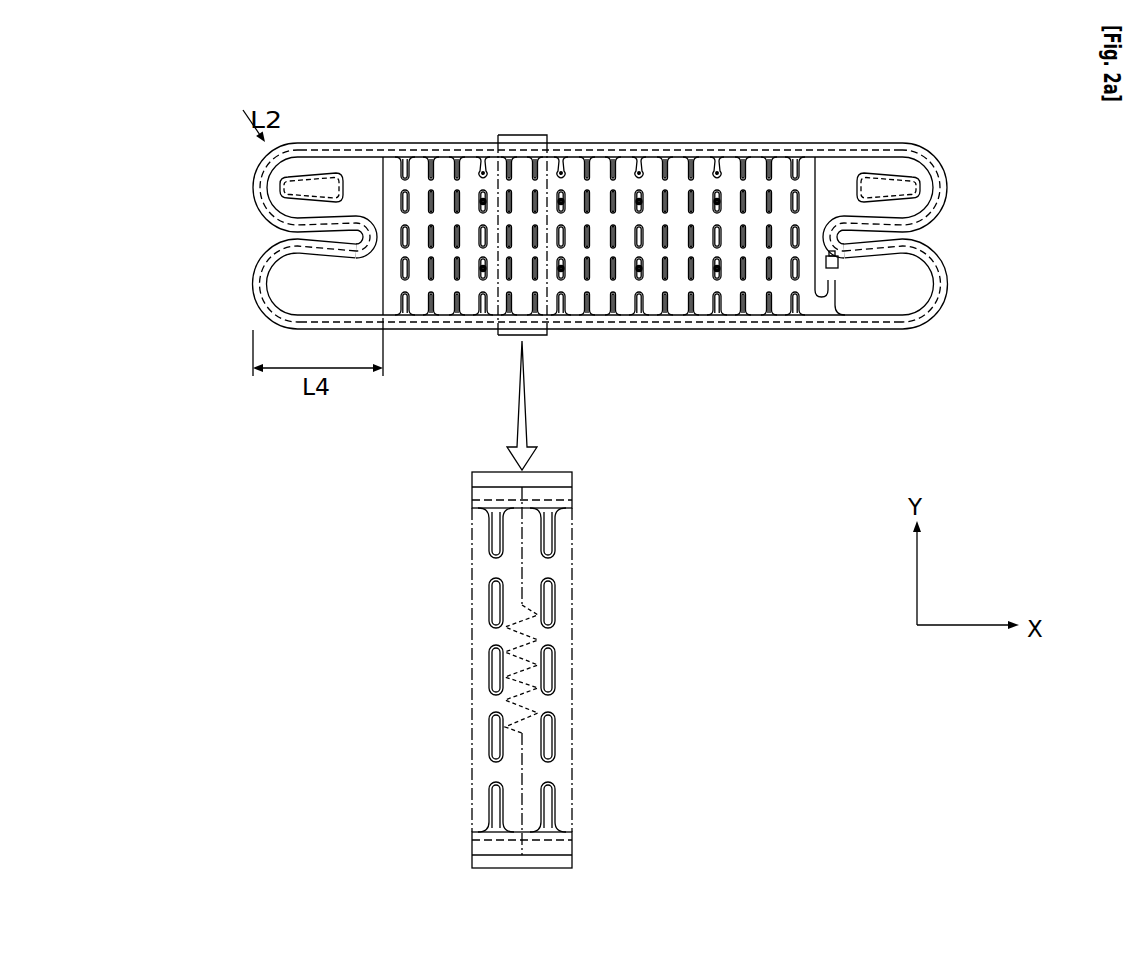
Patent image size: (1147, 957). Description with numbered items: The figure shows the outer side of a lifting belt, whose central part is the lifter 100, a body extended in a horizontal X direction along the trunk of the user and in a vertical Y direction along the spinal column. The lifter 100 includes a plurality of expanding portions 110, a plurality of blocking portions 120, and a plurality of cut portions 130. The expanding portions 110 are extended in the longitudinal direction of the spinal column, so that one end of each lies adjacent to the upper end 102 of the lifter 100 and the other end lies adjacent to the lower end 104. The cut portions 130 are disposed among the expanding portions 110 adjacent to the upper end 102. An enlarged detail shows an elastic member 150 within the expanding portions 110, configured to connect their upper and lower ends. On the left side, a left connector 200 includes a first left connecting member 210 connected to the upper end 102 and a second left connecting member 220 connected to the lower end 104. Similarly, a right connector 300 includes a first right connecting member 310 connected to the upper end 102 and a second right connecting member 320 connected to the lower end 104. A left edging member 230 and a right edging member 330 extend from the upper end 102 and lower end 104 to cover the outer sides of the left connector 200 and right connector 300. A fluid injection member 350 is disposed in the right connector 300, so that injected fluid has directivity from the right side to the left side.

The lifter 100 is at (329, 86).
The upper end 102 is at (602, 143).
The lower end 104 is at (598, 330).
The expanding portions 110 is at (392, 173).
The blocking portions 120 is at (425, 200).
The cut portions 130 is at (483, 160).
The elastic member 150 is at (545, 673).
The left connector 200 is at (242, 236).
The first left connecting member 210 is at (292, 214).
The second left connecting member 220 is at (292, 288).
The left edging member 230 is at (290, 178).
The right connector 300 is at (956, 236).
The first right connecting member 310 is at (907, 213).
The second right connecting member 320 is at (907, 287).
The right edging member 330 is at (940, 188).
The fluid injection member 350 is at (838, 268).